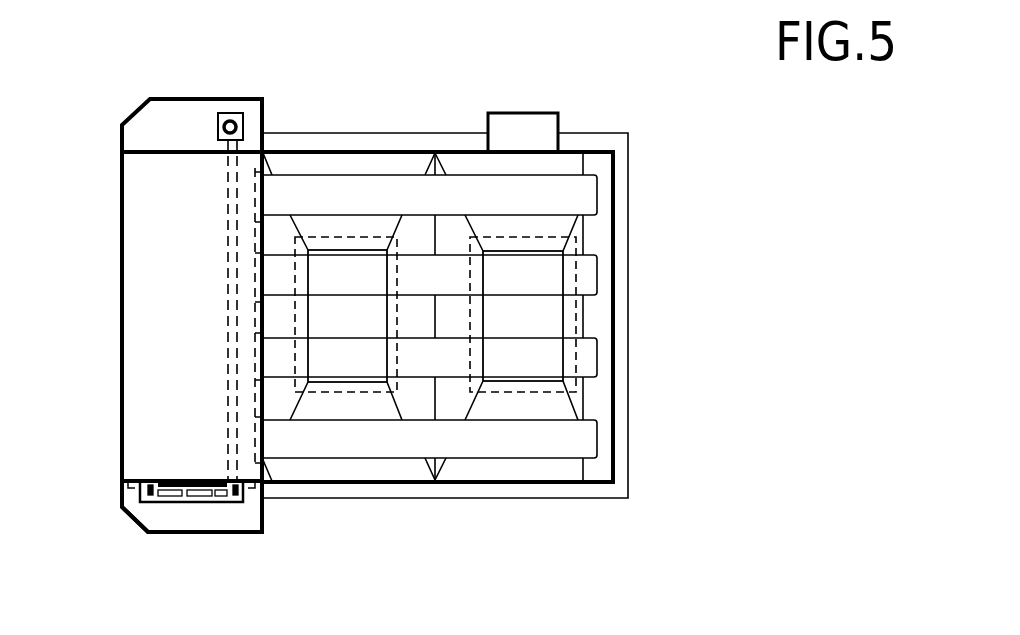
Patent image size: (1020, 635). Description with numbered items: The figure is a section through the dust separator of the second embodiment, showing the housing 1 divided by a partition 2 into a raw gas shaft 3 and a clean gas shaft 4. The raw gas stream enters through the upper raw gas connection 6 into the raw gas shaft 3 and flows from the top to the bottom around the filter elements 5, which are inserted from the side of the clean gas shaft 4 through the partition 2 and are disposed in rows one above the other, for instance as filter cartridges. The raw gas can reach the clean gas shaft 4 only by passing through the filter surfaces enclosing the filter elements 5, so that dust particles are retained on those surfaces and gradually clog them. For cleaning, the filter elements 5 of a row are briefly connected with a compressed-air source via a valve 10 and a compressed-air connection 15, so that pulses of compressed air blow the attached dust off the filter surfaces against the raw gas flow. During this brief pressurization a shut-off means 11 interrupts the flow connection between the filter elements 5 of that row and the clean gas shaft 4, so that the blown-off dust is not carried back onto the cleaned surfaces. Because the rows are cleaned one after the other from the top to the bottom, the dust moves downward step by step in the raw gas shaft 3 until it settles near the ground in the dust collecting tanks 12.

The housing 1 is at (643, 458).
The partition 2 is at (262, 392).
The raw gas shaft 3 is at (597, 312).
The clean gas shaft 4 is at (170, 515).
The filter elements 5 is at (343, 273).
The raw gas connection 6 is at (528, 130).
The valve 10 is at (223, 112).
The shut-off means 11 is at (216, 502).
The dust collecting tanks 12 is at (330, 312).
The compressed-air connection 15 is at (228, 226).